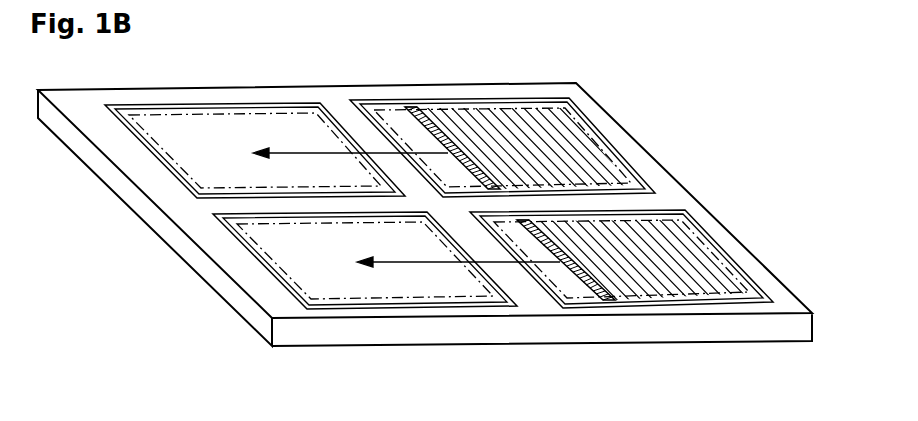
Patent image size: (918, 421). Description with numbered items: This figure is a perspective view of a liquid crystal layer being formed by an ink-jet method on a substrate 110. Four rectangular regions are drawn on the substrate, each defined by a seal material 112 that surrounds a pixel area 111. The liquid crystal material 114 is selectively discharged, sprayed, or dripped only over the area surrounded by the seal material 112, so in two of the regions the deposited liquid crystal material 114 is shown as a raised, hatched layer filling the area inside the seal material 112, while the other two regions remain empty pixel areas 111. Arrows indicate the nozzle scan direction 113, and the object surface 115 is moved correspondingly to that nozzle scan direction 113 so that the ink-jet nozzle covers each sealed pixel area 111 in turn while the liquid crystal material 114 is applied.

The substrate 110 is at (178, 253).
The pixel area 111 is at (165, 148).
The seal material 112 is at (258, 104).
The nozzle scan direction 113 is at (402, 264).
The liquid crystal material 114 is at (585, 160).
The object surface 115 is at (562, 283).